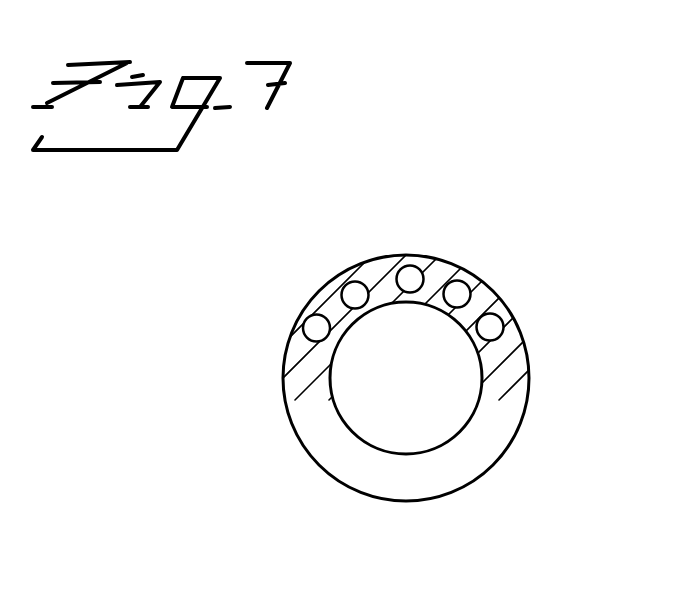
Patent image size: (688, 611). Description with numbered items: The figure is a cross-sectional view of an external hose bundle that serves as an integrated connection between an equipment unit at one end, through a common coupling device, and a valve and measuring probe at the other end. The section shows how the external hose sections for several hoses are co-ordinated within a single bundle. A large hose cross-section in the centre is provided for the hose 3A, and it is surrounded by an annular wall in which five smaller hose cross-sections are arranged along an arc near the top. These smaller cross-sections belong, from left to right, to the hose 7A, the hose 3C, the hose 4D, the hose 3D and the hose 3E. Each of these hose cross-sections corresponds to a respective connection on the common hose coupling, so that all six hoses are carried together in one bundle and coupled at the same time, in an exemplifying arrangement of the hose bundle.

The hose 3A is at (438, 381).
The hose 7A is at (314, 326).
The hose 3C is at (354, 292).
The hose 4D is at (411, 278).
The hose 3D is at (458, 290).
The hose 3E is at (491, 325).